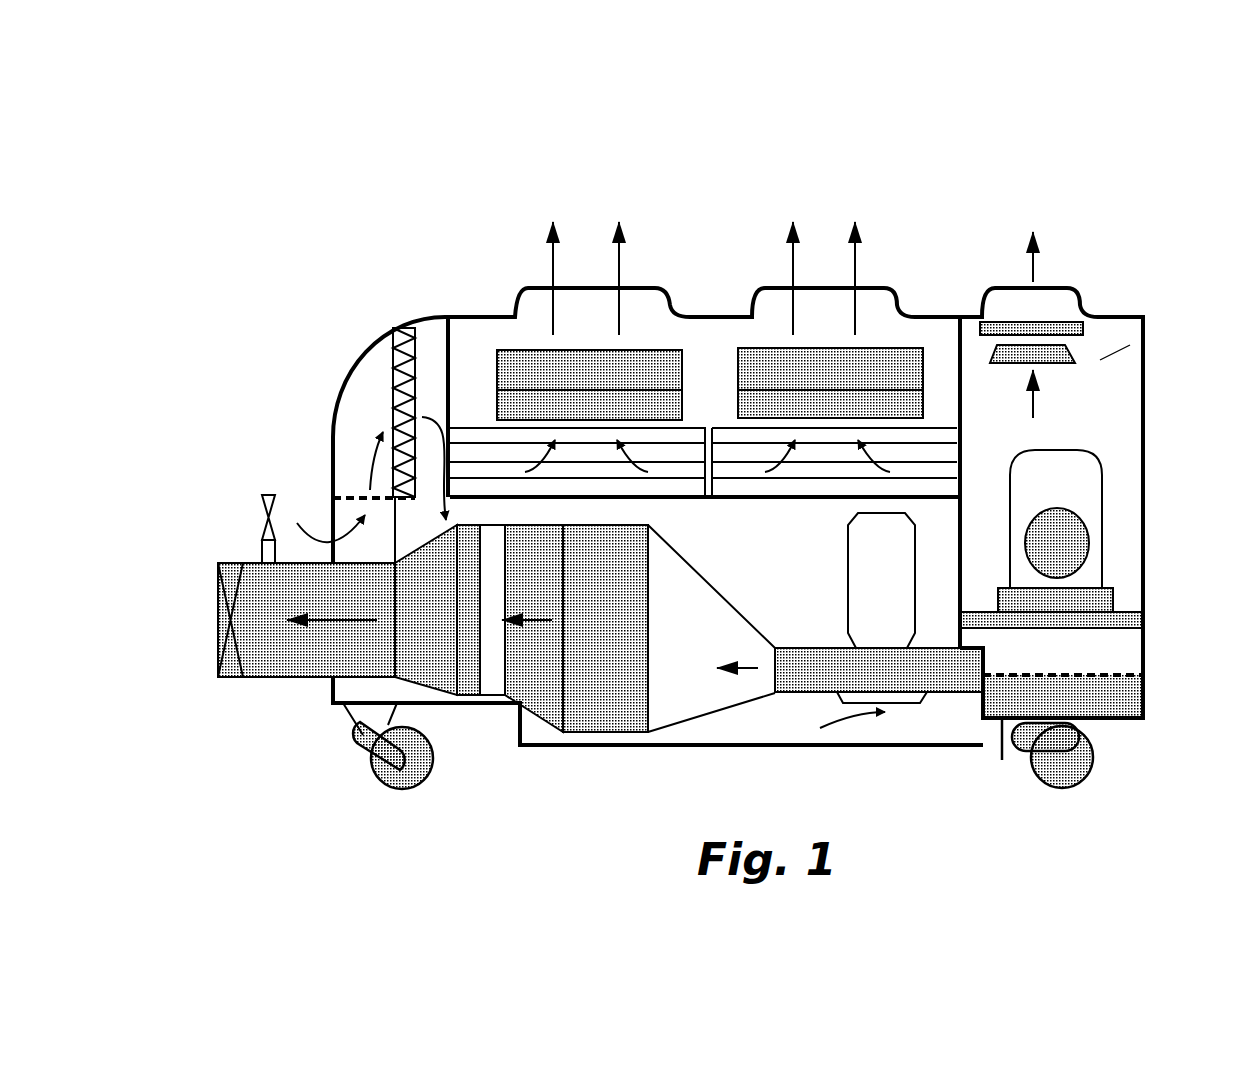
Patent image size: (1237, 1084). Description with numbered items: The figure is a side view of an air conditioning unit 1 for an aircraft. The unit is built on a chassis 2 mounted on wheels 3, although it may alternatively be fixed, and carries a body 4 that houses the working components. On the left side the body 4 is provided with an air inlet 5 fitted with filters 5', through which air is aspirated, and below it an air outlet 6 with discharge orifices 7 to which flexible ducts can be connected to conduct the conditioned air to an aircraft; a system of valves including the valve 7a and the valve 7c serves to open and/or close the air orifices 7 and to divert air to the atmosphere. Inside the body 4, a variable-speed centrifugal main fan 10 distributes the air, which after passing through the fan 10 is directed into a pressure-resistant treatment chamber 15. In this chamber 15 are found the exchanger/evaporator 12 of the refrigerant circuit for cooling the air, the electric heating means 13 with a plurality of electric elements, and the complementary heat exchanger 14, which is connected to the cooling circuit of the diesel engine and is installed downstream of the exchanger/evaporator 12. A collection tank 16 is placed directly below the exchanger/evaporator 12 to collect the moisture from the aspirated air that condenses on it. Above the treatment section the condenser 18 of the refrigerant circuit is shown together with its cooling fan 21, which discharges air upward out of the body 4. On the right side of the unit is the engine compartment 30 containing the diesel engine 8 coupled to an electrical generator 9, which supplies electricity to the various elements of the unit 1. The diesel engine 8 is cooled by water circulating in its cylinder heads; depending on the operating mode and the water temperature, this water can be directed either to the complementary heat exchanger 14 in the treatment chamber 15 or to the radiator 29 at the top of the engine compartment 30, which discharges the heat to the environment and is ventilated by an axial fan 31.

The air conditioning unit 1 is at (1140, 226).
The chassis 2 is at (1148, 695).
The wheels 3 is at (402, 793).
The body 4 is at (1145, 567).
The air inlet 5 is at (364, 479).
The filters 5' is at (369, 398).
The air outlet 6 is at (292, 697).
The discharge orifices 7 is at (252, 678).
The valve 7a is at (230, 653).
The valve 7c is at (262, 508).
The diesel engine 8 is at (1102, 543).
The electrical generator 9 is at (1055, 508).
The main fan 10 is at (912, 703).
The exchanger/evaporator 12 is at (613, 737).
The electric heating means 13 is at (493, 697).
The complementary heat exchanger 14 is at (465, 697).
The treatment chamber 15 is at (683, 729).
The collection tank 16 is at (572, 742).
The condenser 18 is at (497, 397).
The cooling fan 21 is at (760, 350).
The radiator 29 is at (1082, 327).
The engine compartment 30 is at (1108, 362).
The fan 31 is at (1060, 340).